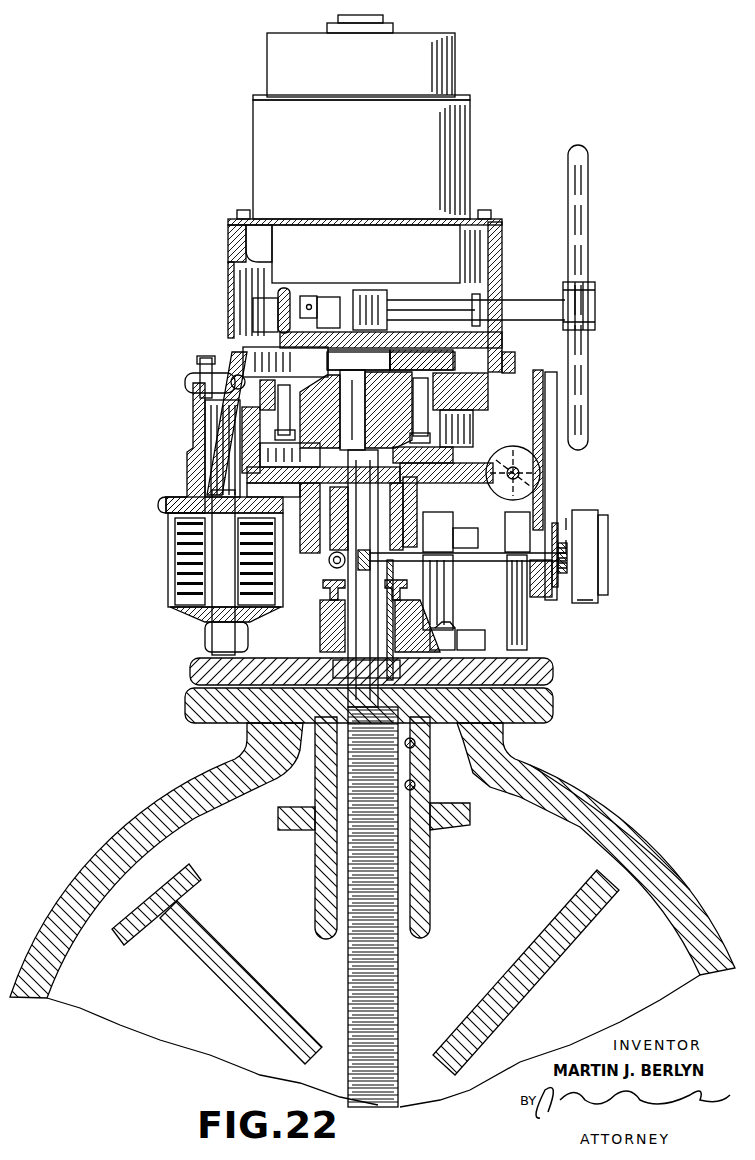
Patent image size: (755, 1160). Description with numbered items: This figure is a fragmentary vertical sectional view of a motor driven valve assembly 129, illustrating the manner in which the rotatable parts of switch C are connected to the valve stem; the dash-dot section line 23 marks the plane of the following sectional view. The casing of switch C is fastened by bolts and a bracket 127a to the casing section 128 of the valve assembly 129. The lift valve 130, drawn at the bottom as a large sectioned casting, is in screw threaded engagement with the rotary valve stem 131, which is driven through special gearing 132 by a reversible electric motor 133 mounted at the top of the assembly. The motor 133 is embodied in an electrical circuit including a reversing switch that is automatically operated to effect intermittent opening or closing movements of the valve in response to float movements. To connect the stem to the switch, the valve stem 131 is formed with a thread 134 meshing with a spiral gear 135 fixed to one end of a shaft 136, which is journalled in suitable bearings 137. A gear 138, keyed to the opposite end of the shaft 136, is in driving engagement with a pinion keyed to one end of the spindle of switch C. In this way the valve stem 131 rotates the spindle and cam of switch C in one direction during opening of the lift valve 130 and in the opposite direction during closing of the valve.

The reversible electric motor 133 is at (364, 117).
The motor driven valve assembly 129 is at (178, 470).
The section line 23- 23 is at (310, 548).
The special gearing 132 is at (499, 434).
The thread 134 is at (330, 566).
The spiral gear 135 is at (364, 578).
The rotary valve stem 131 is at (373, 860).
The shaft 136 is at (455, 557).
The bearings 137 is at (547, 563).
The gear 138 is at (567, 568).
The bracket 127a is at (545, 600).
The casing section 128 is at (537, 658).
The lift valve 130 is at (492, 848).
The switch C is at (593, 503).